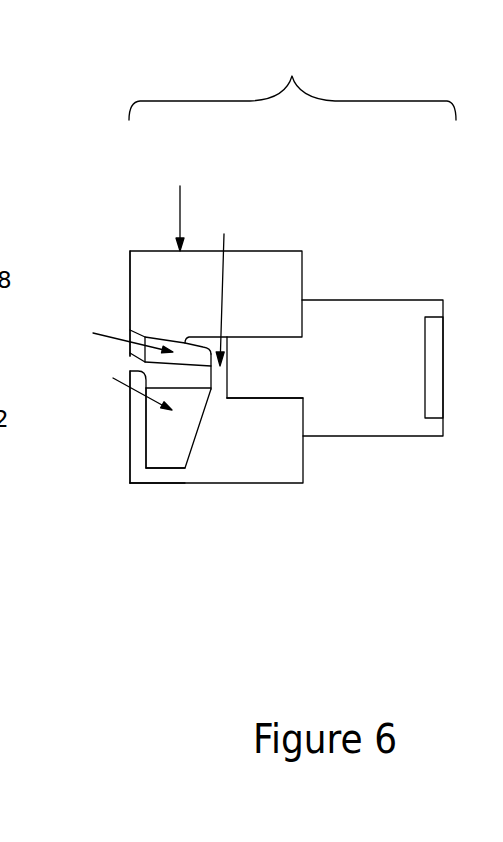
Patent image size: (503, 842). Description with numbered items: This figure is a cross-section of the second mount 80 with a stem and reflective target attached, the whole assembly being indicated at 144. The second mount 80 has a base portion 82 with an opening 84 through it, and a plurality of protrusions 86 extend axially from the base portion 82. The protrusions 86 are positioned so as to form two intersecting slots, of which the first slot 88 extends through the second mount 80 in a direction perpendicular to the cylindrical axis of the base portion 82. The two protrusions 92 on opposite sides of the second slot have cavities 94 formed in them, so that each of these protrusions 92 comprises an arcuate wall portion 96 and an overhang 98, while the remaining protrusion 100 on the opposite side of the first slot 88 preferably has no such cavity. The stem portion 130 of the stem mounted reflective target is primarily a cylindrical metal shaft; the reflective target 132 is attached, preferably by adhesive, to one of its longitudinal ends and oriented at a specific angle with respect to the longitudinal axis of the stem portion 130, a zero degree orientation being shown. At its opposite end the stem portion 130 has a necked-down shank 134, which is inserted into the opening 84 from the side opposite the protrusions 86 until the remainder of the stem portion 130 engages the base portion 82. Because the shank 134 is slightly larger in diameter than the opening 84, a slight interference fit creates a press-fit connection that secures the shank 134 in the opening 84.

The valve assembly 144 is at (292, 81).
The second mount 80 is at (179, 206).
The base portion 82 is at (247, 463).
The opening 84 is at (222, 304).
The protrusions 86 is at (148, 293).
The first slot 88 is at (137, 343).
The protrusions 92 is at (156, 456).
The cavities 94 is at (148, 385).
The arcuate wall portion 96 is at (172, 480).
The overhang 98 is at (135, 418).
The remaining protrusion 100 is at (142, 276).
The stem portion 130 is at (350, 317).
The reflective target 132 is at (438, 377).
The shank 134 is at (277, 378).